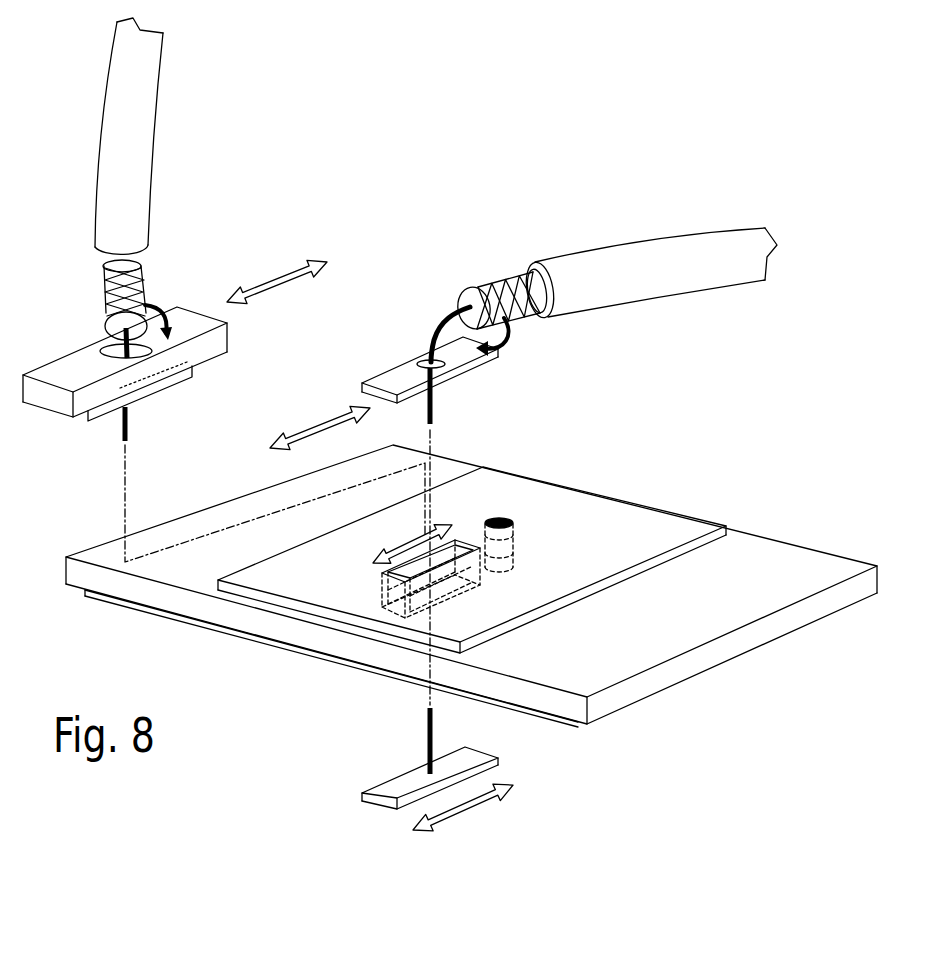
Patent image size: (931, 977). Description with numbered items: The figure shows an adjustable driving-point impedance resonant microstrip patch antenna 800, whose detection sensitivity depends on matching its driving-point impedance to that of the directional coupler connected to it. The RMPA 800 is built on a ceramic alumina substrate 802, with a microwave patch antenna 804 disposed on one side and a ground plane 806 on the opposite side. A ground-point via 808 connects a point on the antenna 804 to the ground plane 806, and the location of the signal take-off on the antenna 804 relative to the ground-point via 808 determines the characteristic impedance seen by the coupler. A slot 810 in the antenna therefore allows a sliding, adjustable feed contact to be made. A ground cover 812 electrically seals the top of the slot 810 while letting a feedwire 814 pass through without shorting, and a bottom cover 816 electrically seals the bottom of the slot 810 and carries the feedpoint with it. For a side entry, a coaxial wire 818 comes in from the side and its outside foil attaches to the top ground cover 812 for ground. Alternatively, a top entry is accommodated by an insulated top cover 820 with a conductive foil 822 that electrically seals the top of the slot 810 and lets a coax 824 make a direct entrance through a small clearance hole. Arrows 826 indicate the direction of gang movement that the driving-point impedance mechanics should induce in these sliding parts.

The adjustable driving-point impedance resonant microstrip patch antenna 800 is at (250, 768).
The ceramic alumina substrate 802 is at (789, 548).
The microwave patch antenna 804 is at (612, 498).
The ground plane 806 is at (284, 647).
The ground-point via 808 is at (514, 541).
The slot 810 is at (462, 540).
The ground cover 812 is at (480, 368).
The feedwire 814 is at (128, 431).
The bottom cover 816 is at (376, 803).
The coaxial wire 818 is at (593, 248).
The insulated top cover 820 is at (182, 316).
The conductive foil 822 is at (181, 387).
The coax 824 is at (152, 127).
The arrows 826 is at (280, 272).